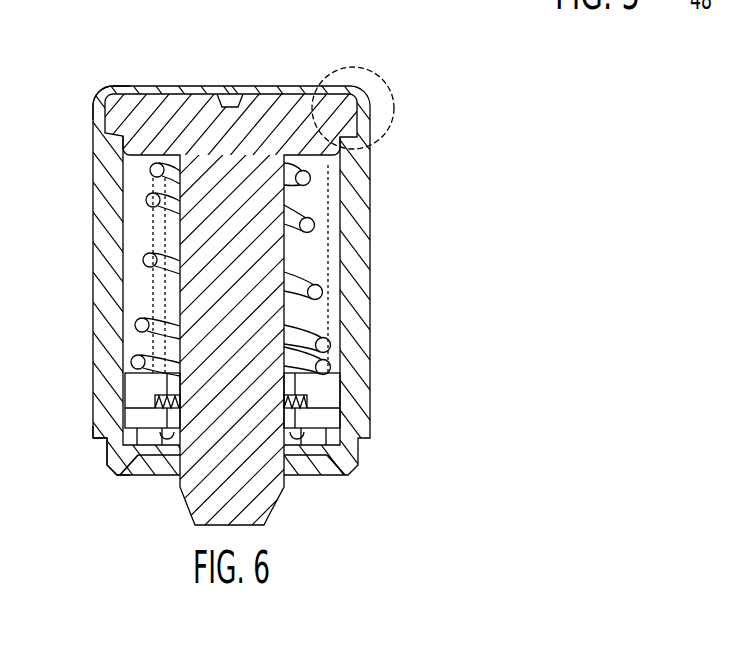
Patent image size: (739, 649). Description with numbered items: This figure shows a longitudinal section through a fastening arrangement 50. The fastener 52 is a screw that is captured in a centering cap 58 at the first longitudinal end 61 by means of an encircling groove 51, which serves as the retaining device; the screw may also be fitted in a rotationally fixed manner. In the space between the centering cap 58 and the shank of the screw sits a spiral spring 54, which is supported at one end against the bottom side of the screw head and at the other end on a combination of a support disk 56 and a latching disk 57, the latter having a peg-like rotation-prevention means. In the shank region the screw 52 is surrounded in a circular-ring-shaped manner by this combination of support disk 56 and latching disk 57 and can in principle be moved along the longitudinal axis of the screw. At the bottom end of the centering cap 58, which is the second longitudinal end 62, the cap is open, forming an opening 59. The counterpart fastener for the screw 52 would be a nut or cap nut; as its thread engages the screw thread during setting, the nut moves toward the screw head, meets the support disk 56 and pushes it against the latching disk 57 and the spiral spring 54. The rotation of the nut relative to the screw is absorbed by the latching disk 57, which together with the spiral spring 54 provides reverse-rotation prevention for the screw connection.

The fastening arrangement 50 is at (265, 73).
The encircling groove 51 is at (394, 87).
The fastener 52 is at (243, 245).
The spiral spring 54 is at (320, 294).
The support disk 56 is at (322, 415).
The latching disk 57 is at (317, 392).
The centering cap 58 is at (356, 197).
The opening 59 is at (300, 487).
The first longitudinal end 61 is at (91, 77).
The second longitudinal end 62 is at (81, 465).